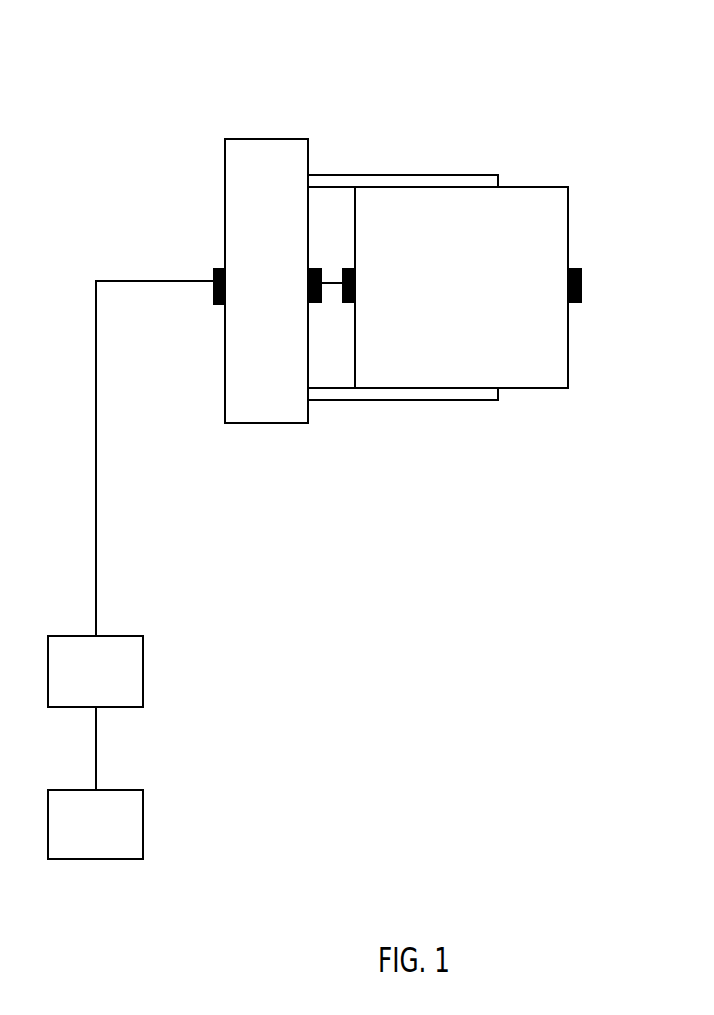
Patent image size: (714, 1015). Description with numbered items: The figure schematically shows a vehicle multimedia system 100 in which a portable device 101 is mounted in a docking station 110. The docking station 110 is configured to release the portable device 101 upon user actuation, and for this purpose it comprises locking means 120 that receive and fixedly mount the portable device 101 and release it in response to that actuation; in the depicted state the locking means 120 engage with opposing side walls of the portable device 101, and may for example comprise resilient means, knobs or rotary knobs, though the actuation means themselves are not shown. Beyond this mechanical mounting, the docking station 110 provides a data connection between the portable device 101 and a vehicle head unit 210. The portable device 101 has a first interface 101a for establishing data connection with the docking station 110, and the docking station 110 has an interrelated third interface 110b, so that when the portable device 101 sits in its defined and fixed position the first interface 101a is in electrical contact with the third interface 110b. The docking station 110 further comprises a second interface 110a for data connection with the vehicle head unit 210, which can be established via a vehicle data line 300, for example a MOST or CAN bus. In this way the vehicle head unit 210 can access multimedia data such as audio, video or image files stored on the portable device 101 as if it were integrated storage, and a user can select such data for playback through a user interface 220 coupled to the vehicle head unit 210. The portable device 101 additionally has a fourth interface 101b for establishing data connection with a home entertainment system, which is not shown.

The vehicle multimedia system 100 is at (220, 49).
The docking station 110 is at (284, 139).
The second interface 110a is at (213, 268).
The third interface 110b is at (320, 305).
The portable device 101 is at (544, 187).
The first interface 101a is at (343, 305).
The fourth interface 101b is at (582, 305).
The locking means 120 is at (426, 175).
The vehicle data line 300 is at (112, 281).
The vehicle head unit 210 is at (143, 647).
The user interface 220 is at (143, 801).